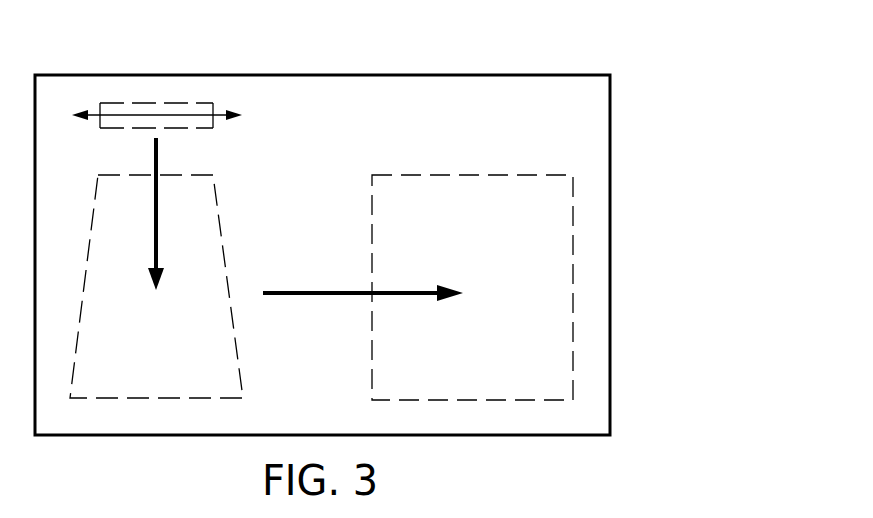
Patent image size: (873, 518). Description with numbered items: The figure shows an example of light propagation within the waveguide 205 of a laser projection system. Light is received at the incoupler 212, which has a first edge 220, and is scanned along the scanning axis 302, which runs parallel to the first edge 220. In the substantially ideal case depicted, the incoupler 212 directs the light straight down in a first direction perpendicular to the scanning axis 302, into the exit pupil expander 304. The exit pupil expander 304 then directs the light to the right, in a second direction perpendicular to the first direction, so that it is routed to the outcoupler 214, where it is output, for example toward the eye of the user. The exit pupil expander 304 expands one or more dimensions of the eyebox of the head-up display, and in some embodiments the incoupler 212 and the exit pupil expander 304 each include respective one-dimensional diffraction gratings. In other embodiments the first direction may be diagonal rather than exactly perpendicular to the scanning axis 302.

The waveguide 205 is at (382, 70).
The incoupler 212 is at (114, 103).
The scanning axis 302 is at (157, 117).
The first edge 220 is at (177, 133).
The exit pupil expander 304 is at (222, 231).
The outcoupler 214 is at (487, 175).